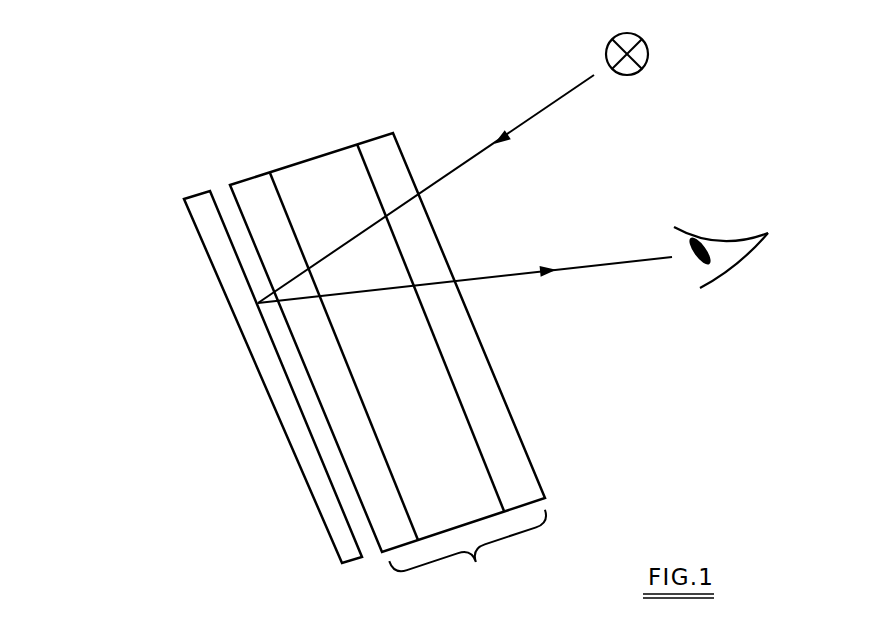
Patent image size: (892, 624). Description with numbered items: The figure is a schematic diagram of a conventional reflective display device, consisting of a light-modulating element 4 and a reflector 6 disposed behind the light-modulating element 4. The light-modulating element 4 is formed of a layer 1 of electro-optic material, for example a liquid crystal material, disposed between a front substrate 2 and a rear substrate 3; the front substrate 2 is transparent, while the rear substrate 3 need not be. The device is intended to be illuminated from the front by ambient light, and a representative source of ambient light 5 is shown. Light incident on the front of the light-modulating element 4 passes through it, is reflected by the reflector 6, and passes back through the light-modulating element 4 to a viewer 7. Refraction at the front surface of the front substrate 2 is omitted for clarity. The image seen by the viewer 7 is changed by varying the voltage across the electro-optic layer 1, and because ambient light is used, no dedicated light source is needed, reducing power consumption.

The layer of electro-optic material 1 is at (331, 162).
The front substrate 2 is at (538, 482).
The rear substrate 3 is at (260, 190).
The light-modulating element 4 is at (471, 556).
The source of ambient light 5 is at (649, 56).
The reflector 6 is at (234, 314).
The viewer 7 is at (753, 284).